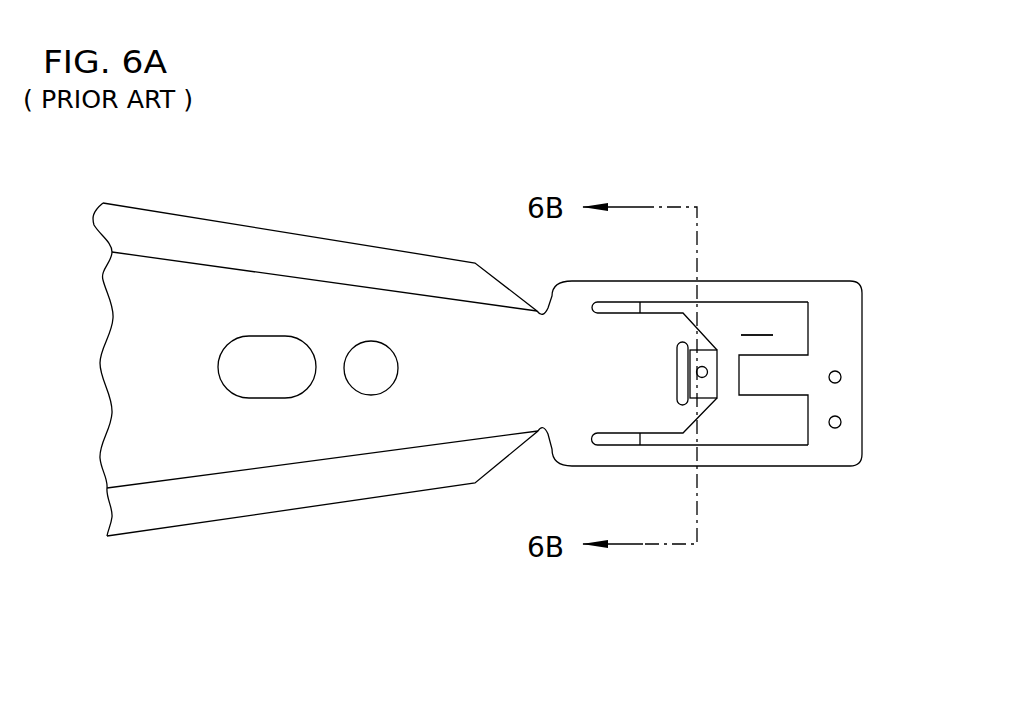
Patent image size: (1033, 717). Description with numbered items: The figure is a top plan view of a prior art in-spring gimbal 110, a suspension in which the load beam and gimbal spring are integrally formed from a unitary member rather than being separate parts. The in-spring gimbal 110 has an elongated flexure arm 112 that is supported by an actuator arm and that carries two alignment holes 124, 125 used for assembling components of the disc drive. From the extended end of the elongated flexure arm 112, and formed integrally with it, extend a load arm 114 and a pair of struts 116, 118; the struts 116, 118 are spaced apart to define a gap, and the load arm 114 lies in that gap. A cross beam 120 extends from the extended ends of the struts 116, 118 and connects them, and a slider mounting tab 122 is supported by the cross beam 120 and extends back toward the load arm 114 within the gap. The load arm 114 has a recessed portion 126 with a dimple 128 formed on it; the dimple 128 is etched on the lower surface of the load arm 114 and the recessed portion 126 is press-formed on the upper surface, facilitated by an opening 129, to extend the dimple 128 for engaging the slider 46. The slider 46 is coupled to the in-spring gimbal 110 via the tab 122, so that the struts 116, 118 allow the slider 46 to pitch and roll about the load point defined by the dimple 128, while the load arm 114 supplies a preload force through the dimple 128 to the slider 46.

The in-spring gimbal 110 is at (476, 185).
The elongated flexure arm 112 is at (245, 297).
The load arm 114 is at (622, 316).
The strut 116 is at (740, 290).
The strut 118 is at (730, 467).
The cross beam 120 is at (843, 318).
The slider mounting tab 122 is at (772, 396).
The alignment hole 124 is at (263, 398).
The alignment hole 125 is at (367, 395).
The recessed portion 126 is at (708, 392).
The dimple 128 is at (707, 374).
The opening 129 is at (677, 375).
The slider 46 is at (757, 322).